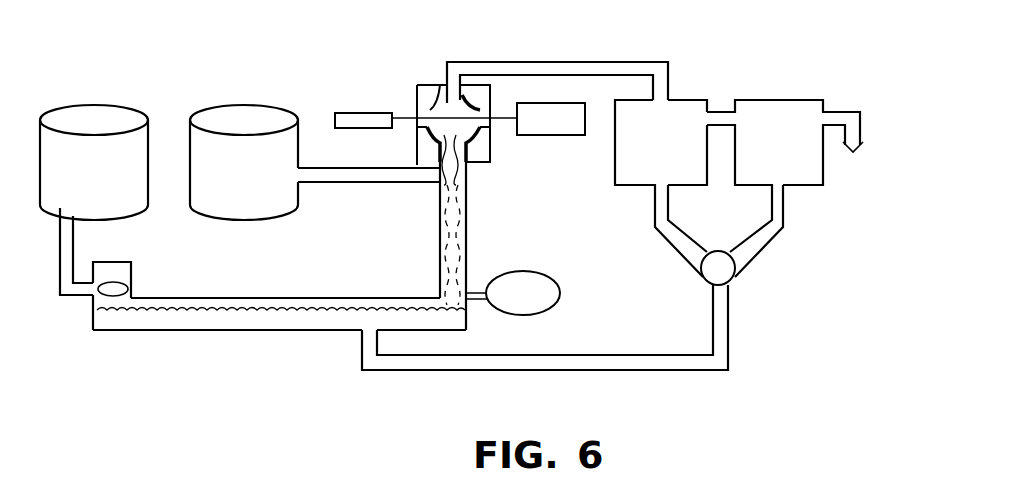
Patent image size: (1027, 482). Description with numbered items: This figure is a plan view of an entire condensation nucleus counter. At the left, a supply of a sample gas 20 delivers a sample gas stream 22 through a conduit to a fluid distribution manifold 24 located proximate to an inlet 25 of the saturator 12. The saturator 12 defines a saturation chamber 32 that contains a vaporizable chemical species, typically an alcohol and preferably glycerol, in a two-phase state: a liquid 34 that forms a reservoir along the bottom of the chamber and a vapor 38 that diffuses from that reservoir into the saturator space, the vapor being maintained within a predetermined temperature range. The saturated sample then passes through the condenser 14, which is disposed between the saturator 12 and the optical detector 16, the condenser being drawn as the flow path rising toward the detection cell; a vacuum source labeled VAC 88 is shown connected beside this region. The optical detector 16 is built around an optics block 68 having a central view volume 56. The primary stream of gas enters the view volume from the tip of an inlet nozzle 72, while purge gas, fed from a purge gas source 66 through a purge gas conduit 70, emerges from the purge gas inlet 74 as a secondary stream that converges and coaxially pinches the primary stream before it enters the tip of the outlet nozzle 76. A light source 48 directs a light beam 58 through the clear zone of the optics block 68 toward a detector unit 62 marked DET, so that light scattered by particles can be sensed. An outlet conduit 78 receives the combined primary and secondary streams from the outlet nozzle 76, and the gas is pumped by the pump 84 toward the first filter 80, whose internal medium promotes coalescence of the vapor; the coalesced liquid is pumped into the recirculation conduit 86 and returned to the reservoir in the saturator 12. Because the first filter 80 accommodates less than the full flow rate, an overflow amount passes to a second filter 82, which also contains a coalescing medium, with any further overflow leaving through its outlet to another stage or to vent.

The saturator 12 is at (201, 331).
The condenser 14 is at (447, 211).
The optical detector 16 is at (400, 89).
The supply of a sample gas 20 is at (128, 220).
The sample gas stream 22 is at (82, 292).
The fluid distribution manifold 24 is at (134, 292).
The inlet of saturator 25 is at (120, 293).
The saturation chamber 32 is at (337, 298).
The liquid 34 is at (278, 322).
The vapor 38 is at (445, 290).
The light source 48 is at (368, 113).
The central view volume 56 is at (438, 96).
The light beam 58 is at (400, 122).
The detector 62 is at (548, 135).
The purge gas source 66 is at (282, 220).
The optics block 68 is at (490, 160).
The purge gas conduit 70 is at (370, 183).
The inlet nozzle 72 is at (457, 172).
The purge gas inlet 74 is at (443, 152).
The outlet nozzle 76 is at (458, 100).
The outlet conduit 78 is at (583, 62).
The first filter 80 is at (690, 100).
The second filter 82 is at (775, 100).
The pump 84 is at (735, 280).
The recirculation conduit 86 is at (632, 372).
The vacuum source 88 is at (560, 296).